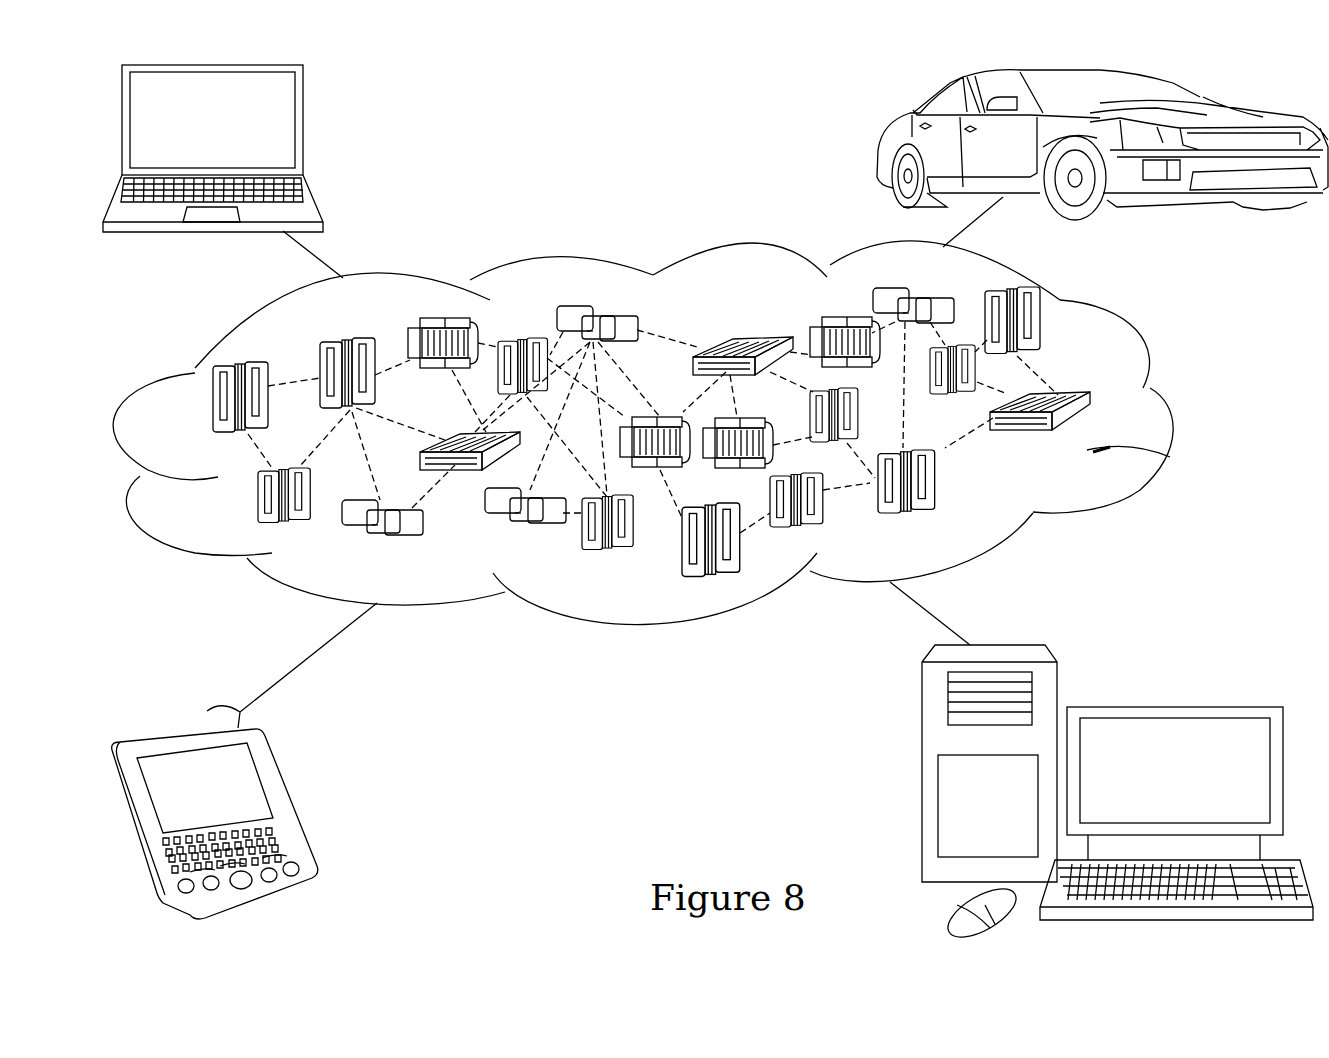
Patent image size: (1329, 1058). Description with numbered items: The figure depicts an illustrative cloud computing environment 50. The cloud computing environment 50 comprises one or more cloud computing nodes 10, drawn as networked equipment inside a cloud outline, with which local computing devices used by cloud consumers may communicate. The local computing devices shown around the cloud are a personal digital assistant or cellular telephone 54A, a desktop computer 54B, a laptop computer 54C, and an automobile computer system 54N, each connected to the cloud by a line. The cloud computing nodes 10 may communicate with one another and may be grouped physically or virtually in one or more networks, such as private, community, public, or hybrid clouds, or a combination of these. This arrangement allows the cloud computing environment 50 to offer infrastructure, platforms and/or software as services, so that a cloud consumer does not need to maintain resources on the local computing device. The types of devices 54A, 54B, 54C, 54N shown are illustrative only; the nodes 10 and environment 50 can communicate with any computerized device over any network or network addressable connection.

The cloud computing environment 50 is at (1175, 403).
The cloud computing nodes 10 is at (1168, 451).
The personal digital assistant (PDA) or cellular telephone 54A is at (290, 800).
The desktop computer 54B is at (1170, 705).
The laptop computer 54C is at (303, 128).
The automobile computer system 54N is at (880, 145).